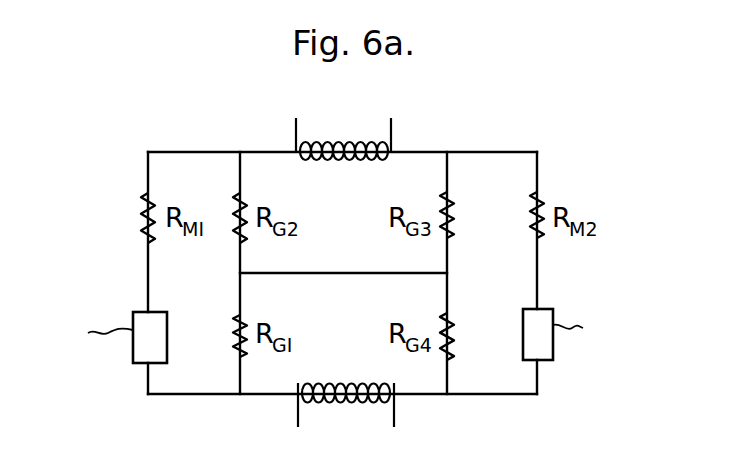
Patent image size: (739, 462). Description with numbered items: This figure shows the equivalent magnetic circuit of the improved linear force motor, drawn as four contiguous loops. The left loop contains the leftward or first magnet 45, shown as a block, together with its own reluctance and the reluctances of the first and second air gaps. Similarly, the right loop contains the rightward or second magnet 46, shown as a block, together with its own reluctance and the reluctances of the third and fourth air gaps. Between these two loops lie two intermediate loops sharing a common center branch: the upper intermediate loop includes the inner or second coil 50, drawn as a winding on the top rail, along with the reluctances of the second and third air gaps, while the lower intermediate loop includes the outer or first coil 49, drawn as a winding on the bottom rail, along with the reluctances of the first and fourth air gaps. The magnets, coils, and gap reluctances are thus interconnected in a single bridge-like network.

The first magnet 45 is at (133, 352).
The second magnet 46 is at (553, 350).
The first coil 49 is at (347, 402).
The second coil 50 is at (347, 143).